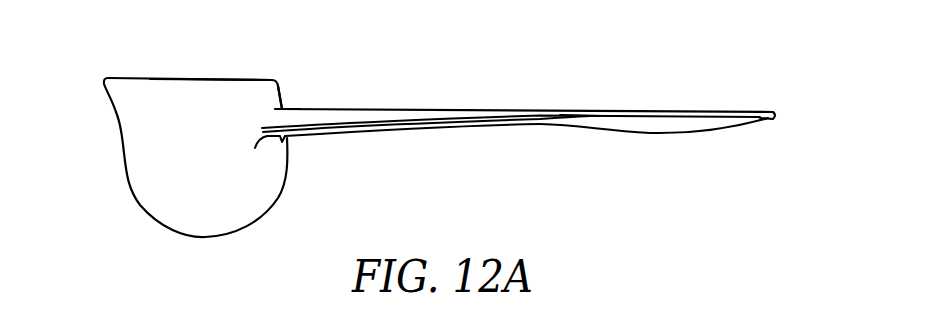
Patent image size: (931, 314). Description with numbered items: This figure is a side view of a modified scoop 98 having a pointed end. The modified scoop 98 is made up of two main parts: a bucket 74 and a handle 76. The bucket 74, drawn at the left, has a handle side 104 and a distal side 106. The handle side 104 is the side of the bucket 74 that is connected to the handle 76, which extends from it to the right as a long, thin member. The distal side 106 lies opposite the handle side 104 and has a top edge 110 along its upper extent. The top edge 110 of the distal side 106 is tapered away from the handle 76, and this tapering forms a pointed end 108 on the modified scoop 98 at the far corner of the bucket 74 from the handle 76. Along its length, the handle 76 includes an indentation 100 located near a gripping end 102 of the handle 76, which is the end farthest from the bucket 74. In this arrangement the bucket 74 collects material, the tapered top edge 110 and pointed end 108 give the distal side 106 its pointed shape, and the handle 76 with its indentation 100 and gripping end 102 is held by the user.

The bucket 74 is at (203, 78).
The handle 76 is at (582, 111).
The modified scoop 98 is at (472, 170).
The indentation 100 is at (693, 110).
The gripping end 102 is at (765, 112).
The handle side 104 is at (283, 92).
The distal side 106 is at (122, 153).
The pointed end 108 is at (102, 85).
The top edge 110 is at (128, 77).